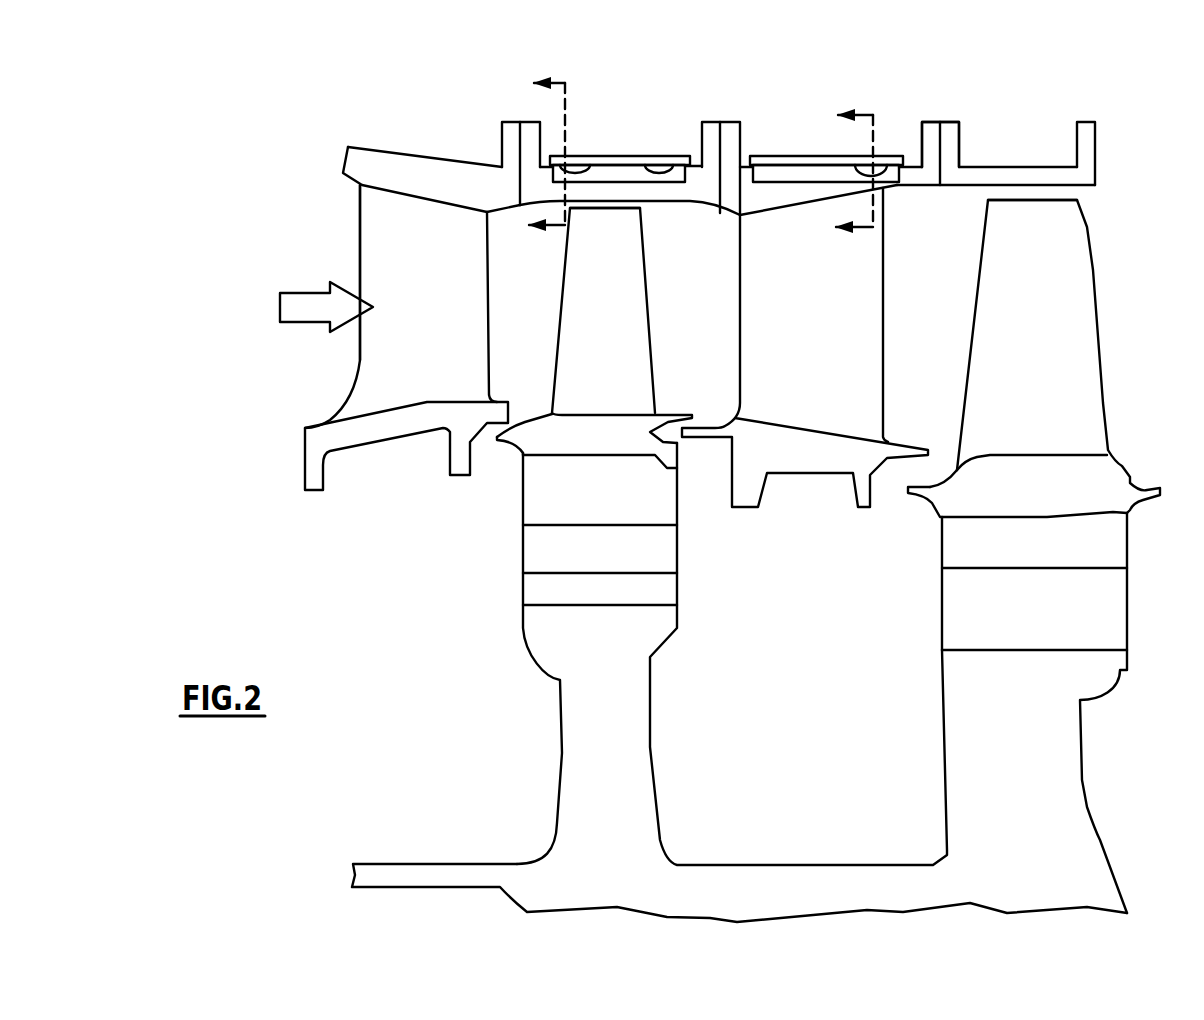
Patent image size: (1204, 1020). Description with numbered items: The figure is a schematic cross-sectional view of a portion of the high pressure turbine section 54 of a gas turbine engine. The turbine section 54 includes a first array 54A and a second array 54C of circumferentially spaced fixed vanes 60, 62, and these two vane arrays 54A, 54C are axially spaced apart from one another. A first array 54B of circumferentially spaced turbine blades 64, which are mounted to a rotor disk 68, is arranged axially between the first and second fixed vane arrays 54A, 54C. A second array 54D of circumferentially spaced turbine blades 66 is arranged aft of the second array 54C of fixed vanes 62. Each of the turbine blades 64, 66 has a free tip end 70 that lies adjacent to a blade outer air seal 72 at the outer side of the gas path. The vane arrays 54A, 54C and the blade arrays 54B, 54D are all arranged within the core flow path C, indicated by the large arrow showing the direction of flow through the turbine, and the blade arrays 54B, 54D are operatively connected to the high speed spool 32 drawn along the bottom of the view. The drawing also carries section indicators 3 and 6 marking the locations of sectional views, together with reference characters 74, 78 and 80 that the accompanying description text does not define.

The high pressure turbine section 54 is at (879, 80).
The first array of fixed vanes 54A is at (420, 146).
The first array of turbine blades 54B is at (618, 102).
The second array of fixed vanes 54C is at (787, 140).
The second array of turbine blades 54D is at (1013, 162).
The fixed vane 60 is at (350, 269).
The fixed vane 62 is at (737, 260).
The turbine blade 64 is at (562, 288).
The turbine blade 66 is at (975, 298).
The rotor disk 68 is at (640, 801).
The free tip end 70 is at (1053, 200).
The blade outer air seal 72 is at (538, 180).
The rail hook 74 is at (712, 140).
The vane airfoil 78 is at (434, 236).
The tip clearance gap 80 is at (617, 210).
The high speed spool 32 is at (353, 877).
The core flow path C is at (308, 317).
The section line 3- 3 is at (551, 159).
The section line 6- 6 is at (857, 171).